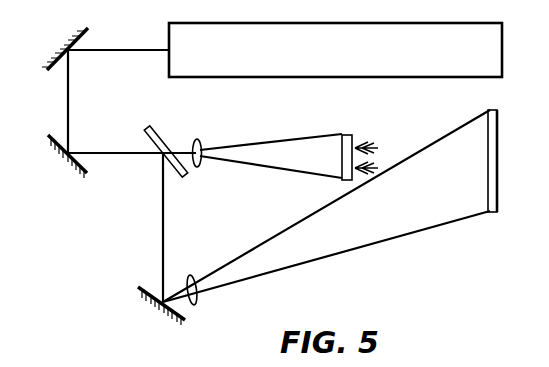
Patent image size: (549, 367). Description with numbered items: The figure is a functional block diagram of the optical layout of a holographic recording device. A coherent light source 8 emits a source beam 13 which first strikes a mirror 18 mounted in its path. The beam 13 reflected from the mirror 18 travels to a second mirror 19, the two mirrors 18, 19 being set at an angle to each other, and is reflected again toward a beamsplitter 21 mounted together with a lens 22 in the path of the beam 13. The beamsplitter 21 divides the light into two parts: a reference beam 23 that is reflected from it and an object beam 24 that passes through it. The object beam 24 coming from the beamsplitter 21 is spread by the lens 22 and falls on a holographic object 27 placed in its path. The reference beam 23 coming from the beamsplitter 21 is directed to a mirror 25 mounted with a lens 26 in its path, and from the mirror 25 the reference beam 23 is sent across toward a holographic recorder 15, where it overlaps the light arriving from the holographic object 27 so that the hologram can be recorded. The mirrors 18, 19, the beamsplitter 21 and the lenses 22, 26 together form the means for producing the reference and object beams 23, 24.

The coherent light source 8 is at (365, 38).
The source beam 13 is at (100, 52).
The holographic recorder 15 is at (492, 166).
The mirror 18 is at (63, 43).
The mirror 19 is at (61, 168).
The beamsplitter 21 is at (163, 140).
The lens 22 is at (199, 166).
The reference beam 23 is at (162, 237).
The object beam 24 is at (192, 152).
The mirror 25 is at (162, 310).
The lens 26 is at (196, 280).
The holographic object 27 is at (350, 133).